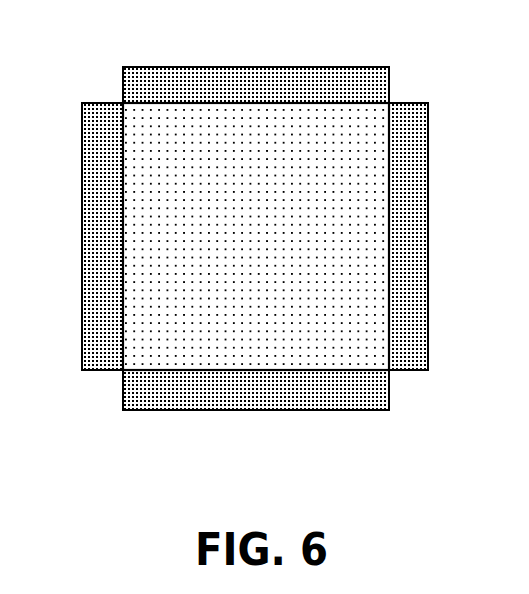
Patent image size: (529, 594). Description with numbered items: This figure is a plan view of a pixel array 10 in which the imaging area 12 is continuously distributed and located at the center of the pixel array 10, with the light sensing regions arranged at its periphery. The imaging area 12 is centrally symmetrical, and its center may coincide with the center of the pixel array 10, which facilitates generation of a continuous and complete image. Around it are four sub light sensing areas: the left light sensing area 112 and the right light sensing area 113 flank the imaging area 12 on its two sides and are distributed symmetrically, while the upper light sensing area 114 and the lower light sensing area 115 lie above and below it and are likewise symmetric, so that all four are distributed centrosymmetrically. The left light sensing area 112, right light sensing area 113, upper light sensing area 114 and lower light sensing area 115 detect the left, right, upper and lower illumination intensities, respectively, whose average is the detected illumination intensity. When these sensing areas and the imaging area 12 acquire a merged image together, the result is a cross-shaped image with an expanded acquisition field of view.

The pixel array 10 is at (263, 242).
The imaging area 12 is at (370, 337).
The left light sensing area 112 is at (93, 178).
The right light sensing area 113 is at (407, 202).
The upper light sensing area 114 is at (288, 78).
The lower light sensing area 115 is at (290, 397).